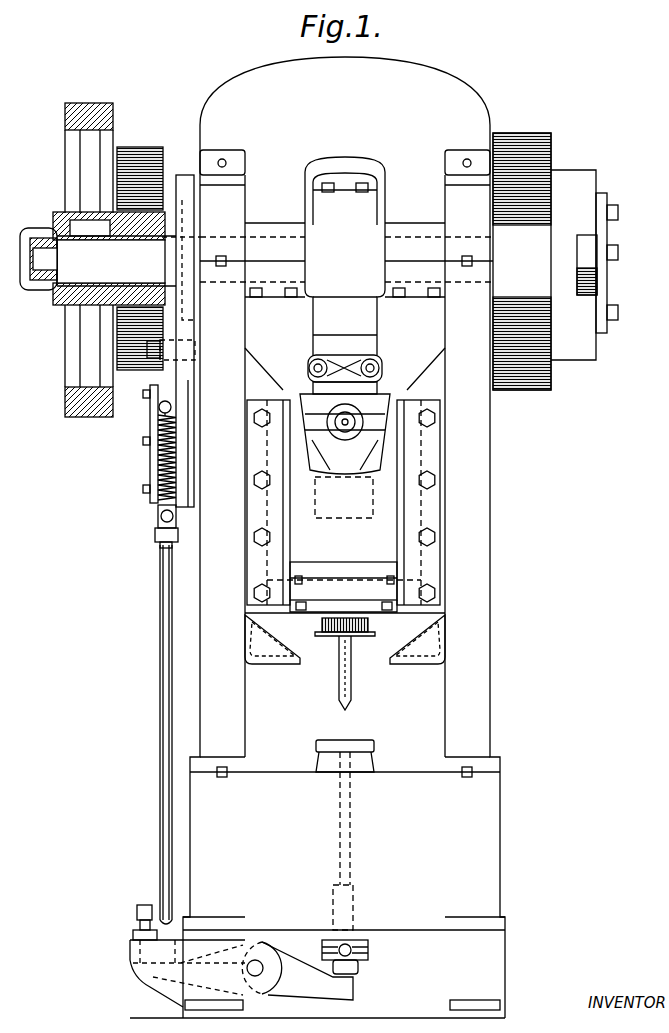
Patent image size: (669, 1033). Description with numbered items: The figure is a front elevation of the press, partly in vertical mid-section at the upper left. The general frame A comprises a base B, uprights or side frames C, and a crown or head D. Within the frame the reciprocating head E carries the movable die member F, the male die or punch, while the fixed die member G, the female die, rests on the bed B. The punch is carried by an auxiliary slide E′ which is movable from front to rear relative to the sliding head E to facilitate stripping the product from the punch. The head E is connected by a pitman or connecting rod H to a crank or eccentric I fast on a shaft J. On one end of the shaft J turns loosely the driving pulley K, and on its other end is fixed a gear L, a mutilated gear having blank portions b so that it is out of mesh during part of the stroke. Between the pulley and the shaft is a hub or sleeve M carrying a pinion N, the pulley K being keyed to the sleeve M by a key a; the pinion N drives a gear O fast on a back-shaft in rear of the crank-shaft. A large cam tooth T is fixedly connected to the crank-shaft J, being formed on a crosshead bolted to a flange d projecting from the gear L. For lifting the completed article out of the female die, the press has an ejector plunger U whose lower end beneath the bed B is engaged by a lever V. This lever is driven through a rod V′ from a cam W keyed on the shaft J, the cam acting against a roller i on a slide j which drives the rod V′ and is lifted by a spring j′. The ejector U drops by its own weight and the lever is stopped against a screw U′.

The general frame A is at (488, 950).
The base B is at (345, 843).
The uprights C is at (344, 584).
The crown D is at (345, 103).
The reciprocating head E is at (345, 529).
The auxiliary slide E′ is at (320, 586).
The movable die member F is at (356, 693).
The fixed die member G is at (365, 766).
The pitman H is at (345, 275).
The eccentric I is at (330, 280).
The shaft J is at (98, 259).
The driving pulley K is at (66, 405).
The gear L is at (535, 392).
The sleeve M is at (120, 298).
The pinion N is at (178, 224).
The gear O is at (143, 148).
The cam tooth T is at (596, 256).
The ejector plunger U is at (358, 966).
The screw U′ is at (137, 912).
The lever V is at (141, 984).
The rod V′ is at (162, 822).
The cam W is at (186, 175).
The key a is at (85, 227).
The blank portion b is at (522, 261).
The flange d is at (585, 360).
The roller i is at (180, 370).
The slide j is at (162, 400).
The spring j′ is at (158, 474).